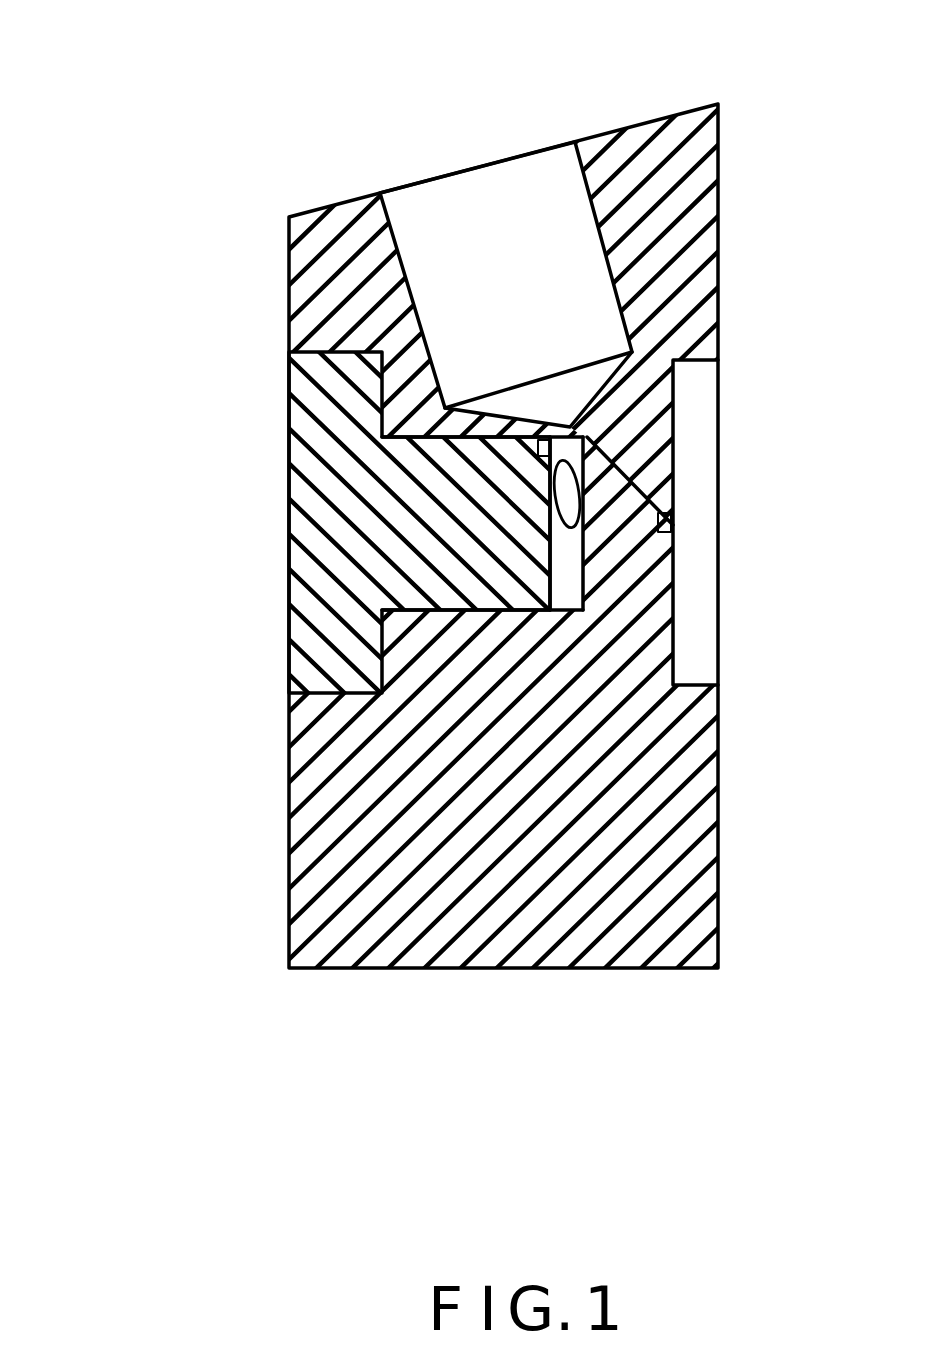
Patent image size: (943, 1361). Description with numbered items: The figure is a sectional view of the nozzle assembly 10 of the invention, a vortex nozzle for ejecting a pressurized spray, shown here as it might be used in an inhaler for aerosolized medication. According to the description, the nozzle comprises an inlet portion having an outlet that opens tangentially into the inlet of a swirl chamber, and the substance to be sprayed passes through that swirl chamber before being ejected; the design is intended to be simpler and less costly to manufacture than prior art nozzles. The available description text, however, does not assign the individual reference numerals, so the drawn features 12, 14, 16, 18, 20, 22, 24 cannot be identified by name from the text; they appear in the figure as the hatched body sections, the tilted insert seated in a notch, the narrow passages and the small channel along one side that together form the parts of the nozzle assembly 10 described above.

The tool holder assembly 10 is at (180, 359).
The holder body 12 is at (598, 488).
The cutting insert 14 is at (538, 217).
The insert seat gap 16 is at (520, 400).
The clamping pin 18 is at (567, 505).
The stop element 20 is at (662, 518).
The slot 22 is at (691, 647).
The clamp 24 is at (307, 612).